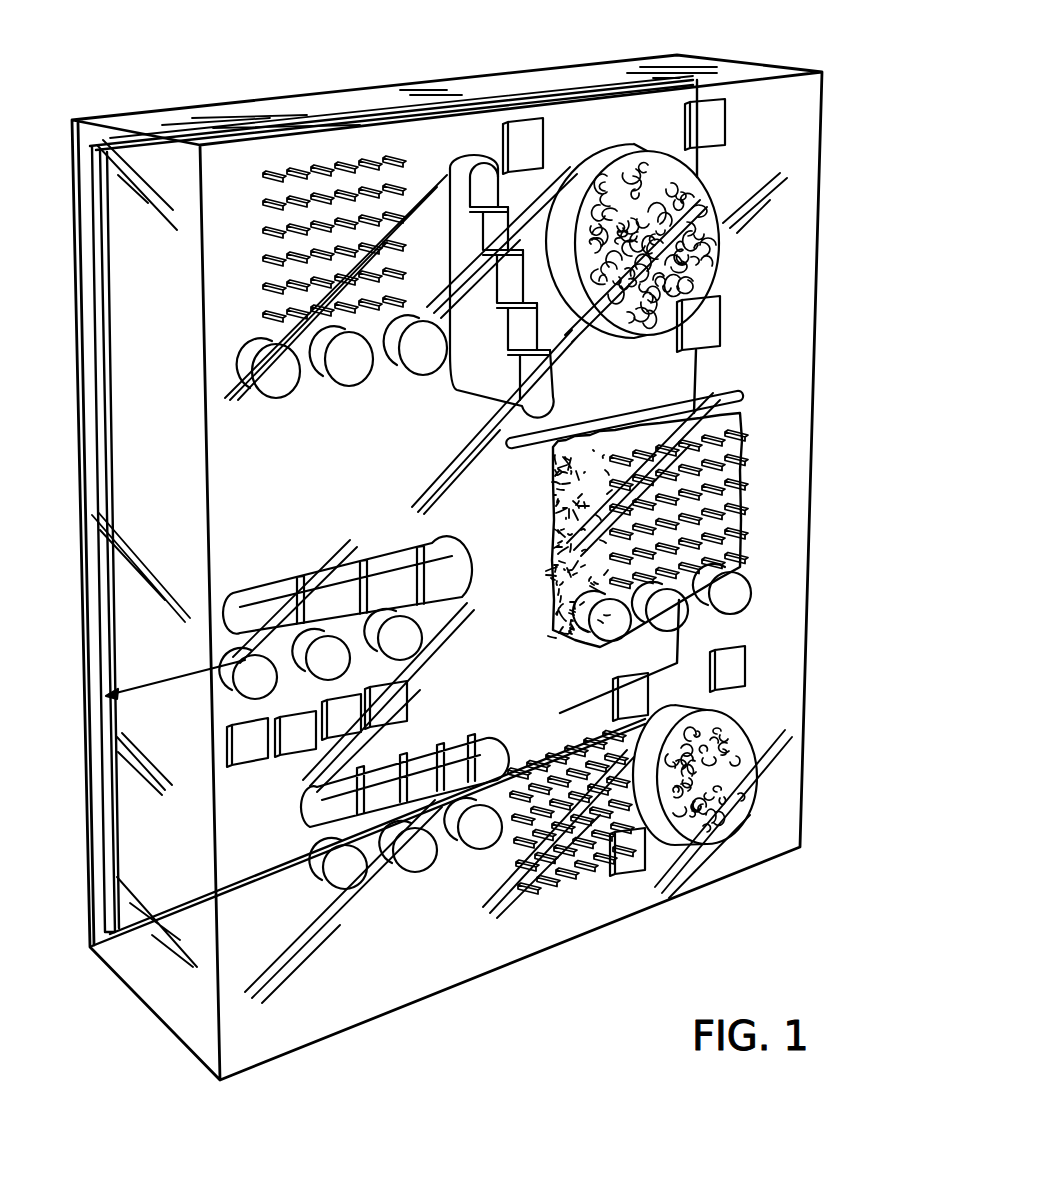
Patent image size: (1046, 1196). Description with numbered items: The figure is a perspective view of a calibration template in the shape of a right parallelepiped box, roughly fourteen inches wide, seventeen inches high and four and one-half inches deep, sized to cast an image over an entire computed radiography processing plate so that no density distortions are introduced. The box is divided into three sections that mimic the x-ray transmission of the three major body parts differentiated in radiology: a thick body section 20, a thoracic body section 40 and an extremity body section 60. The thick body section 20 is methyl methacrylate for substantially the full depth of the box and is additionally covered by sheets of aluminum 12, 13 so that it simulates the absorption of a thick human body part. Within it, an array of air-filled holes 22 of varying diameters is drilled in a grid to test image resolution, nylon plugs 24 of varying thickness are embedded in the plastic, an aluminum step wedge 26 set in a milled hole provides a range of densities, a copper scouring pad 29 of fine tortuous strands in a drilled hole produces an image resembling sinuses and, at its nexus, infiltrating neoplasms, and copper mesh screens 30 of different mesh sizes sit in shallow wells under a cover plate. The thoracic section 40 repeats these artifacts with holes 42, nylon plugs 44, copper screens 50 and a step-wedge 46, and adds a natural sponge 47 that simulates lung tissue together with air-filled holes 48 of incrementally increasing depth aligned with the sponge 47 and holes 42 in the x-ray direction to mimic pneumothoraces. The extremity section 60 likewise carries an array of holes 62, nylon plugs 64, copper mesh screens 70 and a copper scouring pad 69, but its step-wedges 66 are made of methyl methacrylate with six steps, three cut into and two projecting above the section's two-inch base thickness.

The sheet of aluminum 12 is at (95, 187).
The sheet of aluminum 13 is at (95, 285).
The thick body section 20 is at (832, 85).
The holes 22 is at (323, 155).
The nylon plugs 24 is at (270, 375).
The step wedge 26 is at (483, 168).
The copper scouring pad 29 is at (614, 190).
The copper mesh screens 30 is at (705, 117).
The thoracic body section 40 is at (818, 446).
The holes 42 is at (746, 517).
The nylon plugs 44 is at (245, 678).
The step-wedge 46 is at (230, 600).
The natural sponge 47 is at (735, 402).
The holes 48 is at (745, 600).
The copper screens 50 is at (233, 740).
The extremity body section 60 is at (810, 691).
The holes 62 is at (578, 882).
The nylon plugs 64 is at (358, 875).
The step-wedges 66 is at (312, 808).
The copper scouring pad 69 is at (735, 838).
The copper mesh screens 70 is at (745, 668).